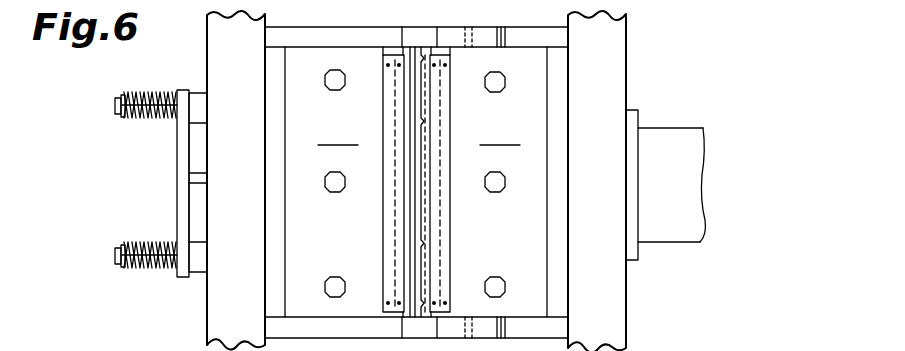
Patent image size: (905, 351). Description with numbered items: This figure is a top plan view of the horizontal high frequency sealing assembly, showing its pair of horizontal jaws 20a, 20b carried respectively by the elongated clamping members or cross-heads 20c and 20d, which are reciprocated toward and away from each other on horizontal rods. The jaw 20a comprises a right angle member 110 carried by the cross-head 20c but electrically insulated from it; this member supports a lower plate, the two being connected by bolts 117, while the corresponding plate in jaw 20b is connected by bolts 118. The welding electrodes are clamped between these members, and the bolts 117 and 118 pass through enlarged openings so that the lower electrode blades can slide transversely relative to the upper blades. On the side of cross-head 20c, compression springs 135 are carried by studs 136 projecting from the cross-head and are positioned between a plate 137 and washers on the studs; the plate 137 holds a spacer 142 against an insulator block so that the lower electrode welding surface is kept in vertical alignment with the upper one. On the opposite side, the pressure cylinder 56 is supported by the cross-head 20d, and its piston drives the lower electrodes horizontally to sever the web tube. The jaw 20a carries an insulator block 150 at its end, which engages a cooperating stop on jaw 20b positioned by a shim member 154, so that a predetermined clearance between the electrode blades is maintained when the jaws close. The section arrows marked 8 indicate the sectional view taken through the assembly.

The horizontal jaw 20a is at (334, 182).
The horizontal jaw 20b is at (498, 182).
The cross-head 20c is at (219, 47).
The cross-head 20d is at (621, 37).
The right angle member 110 is at (310, 60).
The upper insulator block 150 is at (410, 35).
The shim member 154 is at (503, 30).
The bolt 117 is at (333, 192).
The bolt 118 is at (497, 192).
The compression spring 135 is at (152, 92).
The stud 136 is at (115, 106).
The plate 137 is at (183, 152).
The spacer 142 is at (195, 190).
The pressure cylinder 56 is at (693, 135).
The section line 8 is at (120, 180).